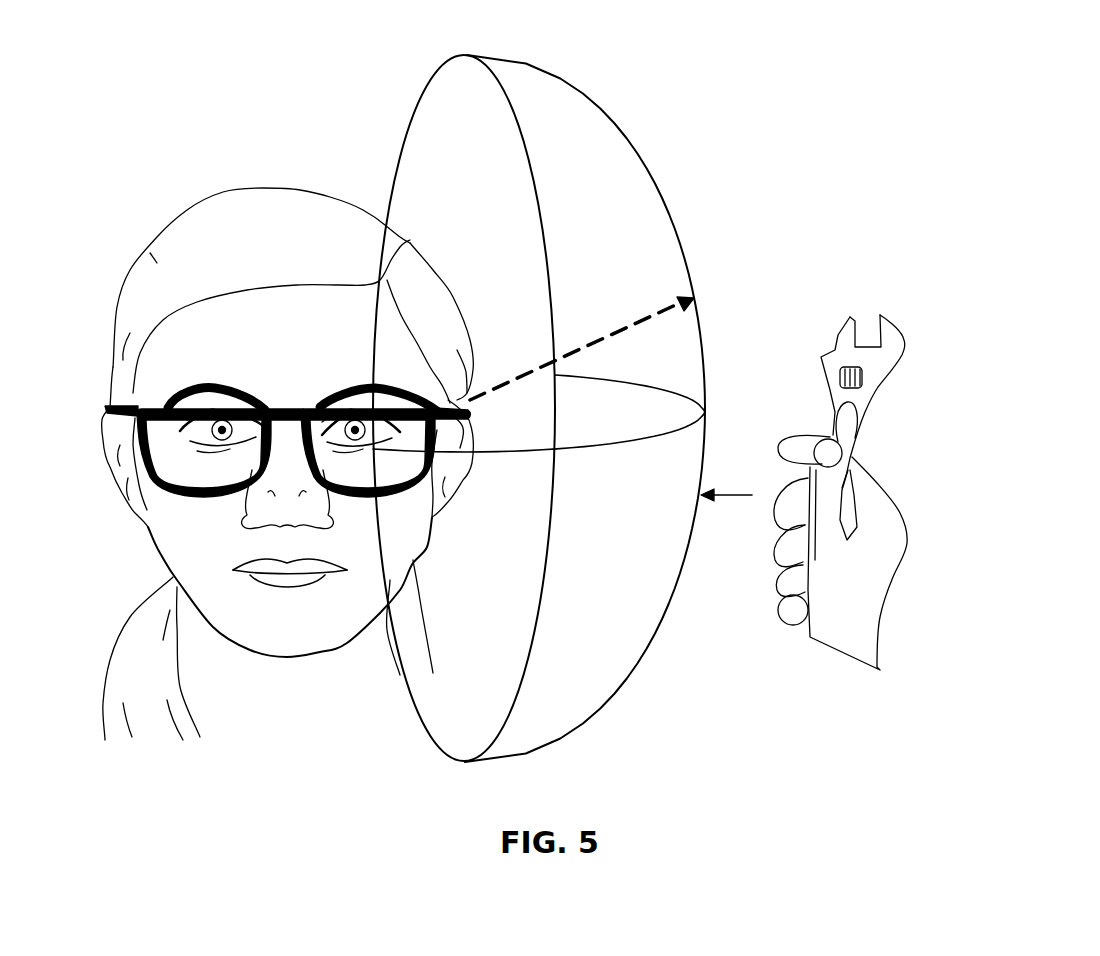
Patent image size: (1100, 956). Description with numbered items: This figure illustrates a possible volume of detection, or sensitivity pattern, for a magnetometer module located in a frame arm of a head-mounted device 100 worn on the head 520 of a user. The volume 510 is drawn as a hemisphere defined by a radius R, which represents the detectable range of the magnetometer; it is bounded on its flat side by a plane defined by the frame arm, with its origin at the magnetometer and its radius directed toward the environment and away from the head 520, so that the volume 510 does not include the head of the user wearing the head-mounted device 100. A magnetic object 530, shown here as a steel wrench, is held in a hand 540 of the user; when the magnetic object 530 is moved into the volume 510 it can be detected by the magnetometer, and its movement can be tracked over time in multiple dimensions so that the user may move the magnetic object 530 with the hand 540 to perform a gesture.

The head-mounted device 100 is at (104, 409).
The volume 510 is at (588, 102).
The head 520 is at (293, 212).
The magnetic object 530 is at (903, 341).
The hand 540 is at (893, 553).